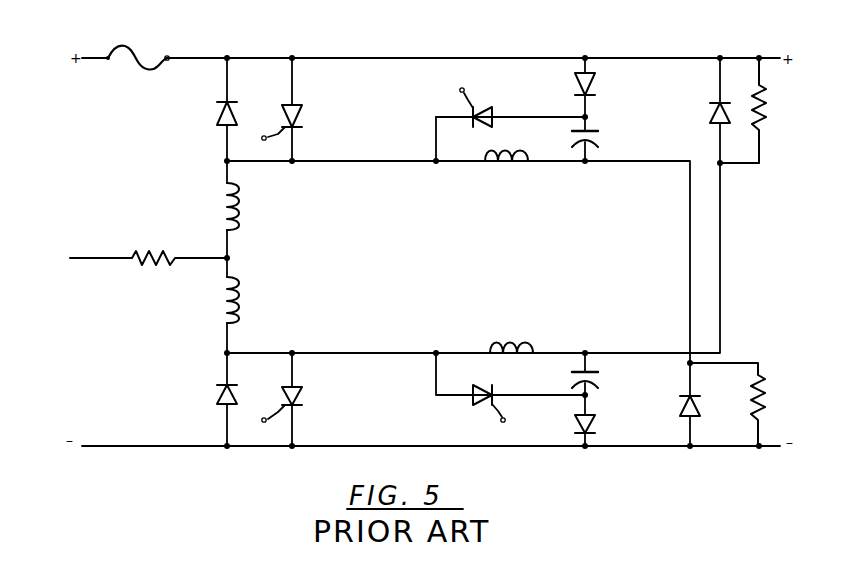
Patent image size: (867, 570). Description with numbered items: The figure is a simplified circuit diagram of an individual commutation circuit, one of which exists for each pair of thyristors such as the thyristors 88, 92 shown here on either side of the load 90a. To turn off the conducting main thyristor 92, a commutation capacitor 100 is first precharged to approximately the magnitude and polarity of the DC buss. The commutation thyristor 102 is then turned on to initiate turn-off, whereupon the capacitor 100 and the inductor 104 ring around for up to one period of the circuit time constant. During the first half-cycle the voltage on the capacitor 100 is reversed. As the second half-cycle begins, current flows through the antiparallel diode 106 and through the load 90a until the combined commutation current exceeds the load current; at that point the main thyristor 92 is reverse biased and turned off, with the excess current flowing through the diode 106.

The antiparallel diode 106 is at (218, 116).
The main thyristor 92 is at (301, 117).
The thyristor 88 is at (302, 397).
The load 90a is at (160, 266).
The commutation thyristor 102 is at (492, 112).
The inductor 104 is at (504, 164).
The commutation capacitor 100 is at (590, 134).